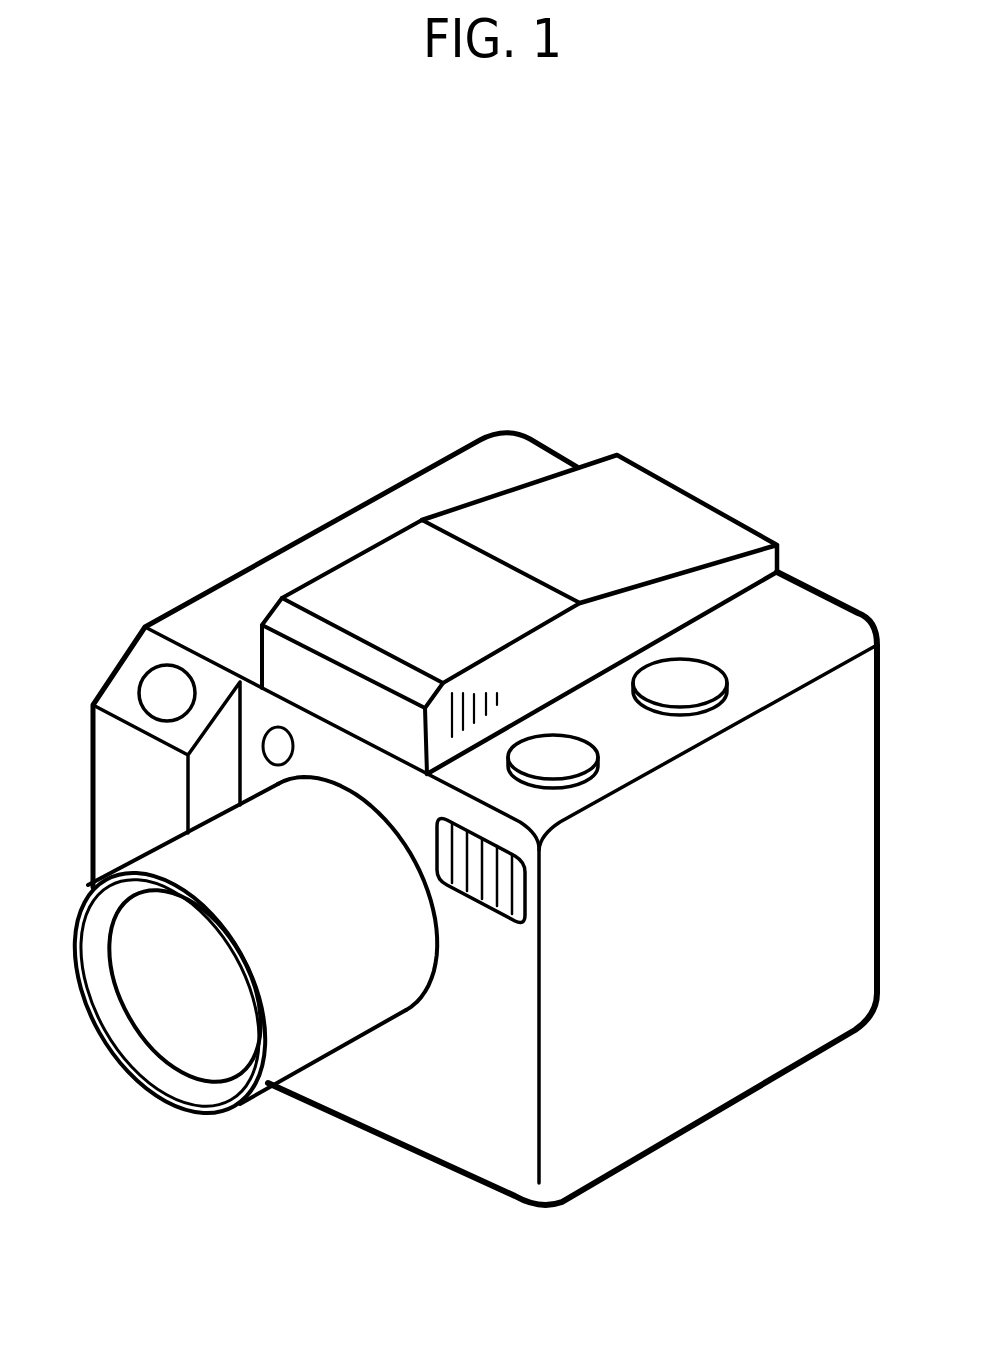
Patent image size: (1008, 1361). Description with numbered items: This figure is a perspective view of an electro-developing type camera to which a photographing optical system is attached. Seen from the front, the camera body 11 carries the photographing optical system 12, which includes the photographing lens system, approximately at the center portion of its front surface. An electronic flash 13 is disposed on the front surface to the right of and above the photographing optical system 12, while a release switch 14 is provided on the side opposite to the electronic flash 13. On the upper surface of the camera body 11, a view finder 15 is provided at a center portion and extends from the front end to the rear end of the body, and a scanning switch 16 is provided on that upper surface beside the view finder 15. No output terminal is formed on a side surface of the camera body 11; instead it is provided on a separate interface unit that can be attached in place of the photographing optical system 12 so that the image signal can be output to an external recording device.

The camera body 11 is at (415, 1181).
The photographing optical system 12 is at (198, 1035).
The electronic flash 13 is at (503, 887).
The release switch 14 is at (167, 693).
The view finder 15 is at (372, 546).
The scanning switch 16 is at (680, 683).